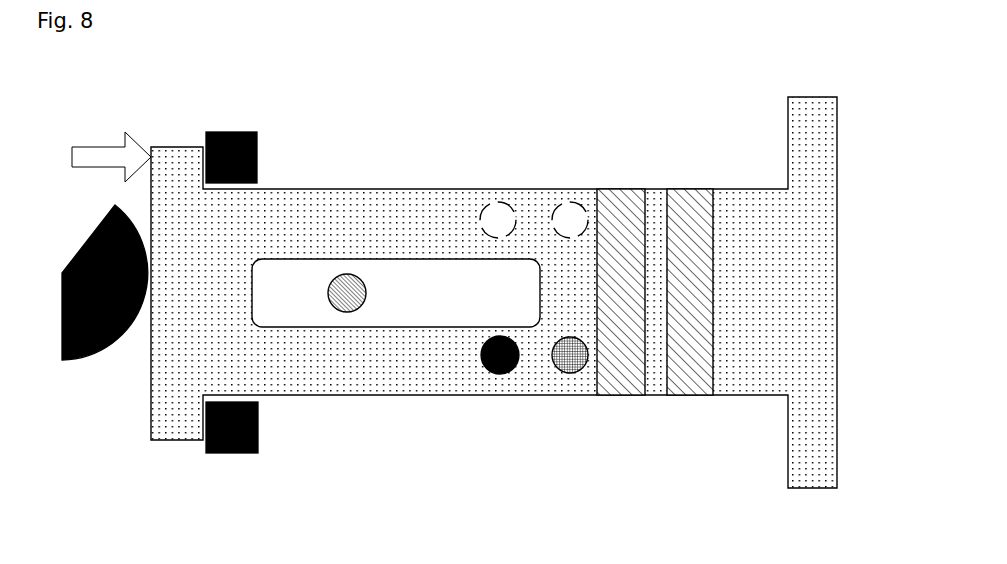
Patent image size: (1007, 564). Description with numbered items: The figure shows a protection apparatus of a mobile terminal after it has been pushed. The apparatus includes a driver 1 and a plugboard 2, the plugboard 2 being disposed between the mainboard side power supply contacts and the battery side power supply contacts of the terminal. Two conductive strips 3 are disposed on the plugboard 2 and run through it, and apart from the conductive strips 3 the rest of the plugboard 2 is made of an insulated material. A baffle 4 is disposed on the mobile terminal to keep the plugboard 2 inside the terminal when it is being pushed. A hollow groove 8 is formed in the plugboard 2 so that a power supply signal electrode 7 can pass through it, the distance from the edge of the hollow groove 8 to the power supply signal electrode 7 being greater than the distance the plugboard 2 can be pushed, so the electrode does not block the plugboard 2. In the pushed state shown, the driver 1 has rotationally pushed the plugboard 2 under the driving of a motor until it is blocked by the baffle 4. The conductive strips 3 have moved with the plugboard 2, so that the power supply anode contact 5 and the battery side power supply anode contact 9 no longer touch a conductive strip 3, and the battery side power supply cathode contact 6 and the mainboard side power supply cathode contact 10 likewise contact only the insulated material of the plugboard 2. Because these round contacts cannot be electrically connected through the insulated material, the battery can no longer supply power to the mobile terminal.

The driver 1 is at (75, 257).
The plugboard 2 is at (177, 188).
The conductive strips 3 is at (693, 262).
The baffle 4 is at (227, 132).
The power supply anode contact 5 is at (563, 375).
The battery side power supply cathode contact 6 is at (497, 375).
The power supply signal electrode 7 is at (345, 290).
The hollow groove 8 is at (395, 315).
The battery side power supply anode contact 9 is at (570, 218).
The mainboard side power supply cathode contact 10 is at (497, 213).